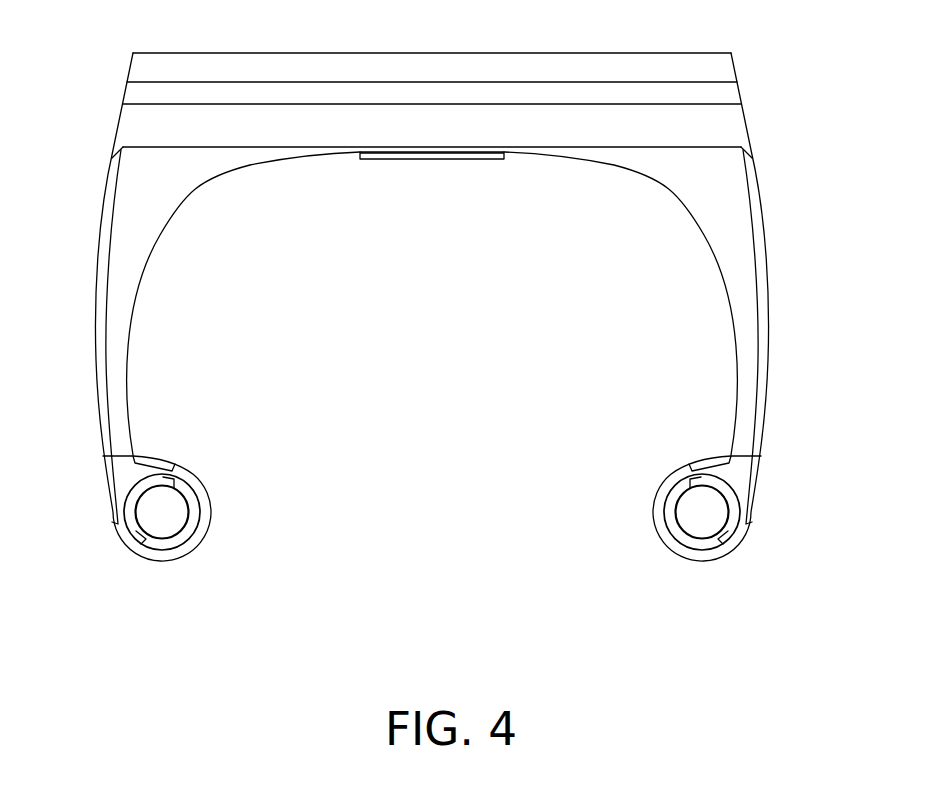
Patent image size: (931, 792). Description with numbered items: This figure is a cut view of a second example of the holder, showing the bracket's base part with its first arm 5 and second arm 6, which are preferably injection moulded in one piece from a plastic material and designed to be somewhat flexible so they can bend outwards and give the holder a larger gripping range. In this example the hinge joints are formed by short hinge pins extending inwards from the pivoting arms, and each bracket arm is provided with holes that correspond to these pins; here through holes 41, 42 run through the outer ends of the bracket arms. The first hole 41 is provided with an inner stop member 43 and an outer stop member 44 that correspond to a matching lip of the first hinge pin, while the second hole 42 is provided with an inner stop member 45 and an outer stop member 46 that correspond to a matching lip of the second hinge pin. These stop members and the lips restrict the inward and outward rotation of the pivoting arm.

The first arm 5 is at (737, 260).
The second arm 6 is at (123, 260).
The first hole 41 is at (702, 511).
The second hole 42 is at (163, 511).
The inner stop member 43 is at (687, 483).
The outer stop member 44 is at (713, 538).
The inner stop member 45 is at (177, 482).
The outer stop member 46 is at (153, 540).